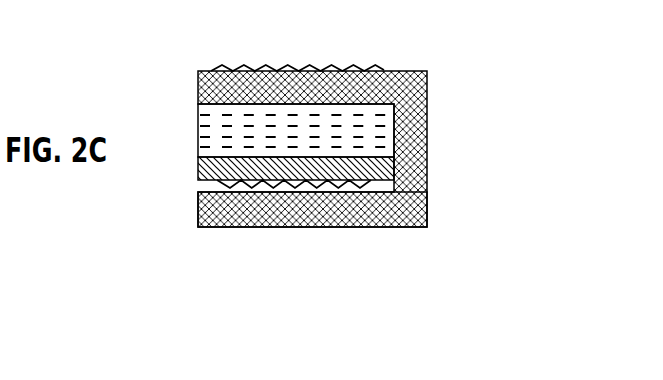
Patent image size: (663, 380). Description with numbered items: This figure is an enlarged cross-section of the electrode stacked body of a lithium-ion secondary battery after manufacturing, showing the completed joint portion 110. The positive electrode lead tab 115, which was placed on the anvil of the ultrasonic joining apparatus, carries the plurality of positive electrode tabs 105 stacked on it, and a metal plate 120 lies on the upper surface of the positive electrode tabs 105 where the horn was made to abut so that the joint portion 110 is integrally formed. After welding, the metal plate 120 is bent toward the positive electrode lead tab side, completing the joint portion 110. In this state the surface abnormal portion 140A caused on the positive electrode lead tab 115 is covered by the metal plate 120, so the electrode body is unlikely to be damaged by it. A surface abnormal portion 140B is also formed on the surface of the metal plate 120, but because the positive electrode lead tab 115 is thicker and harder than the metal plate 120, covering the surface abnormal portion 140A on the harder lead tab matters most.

The joint portion 110 is at (177, 63).
The positive electrode tabs 105 is at (352, 135).
The positive electrode lead tab 115 is at (380, 175).
The metal plate 120 is at (322, 227).
The surface abnormal portion 140A is at (258, 182).
The surface abnormal portion 140B is at (289, 66).